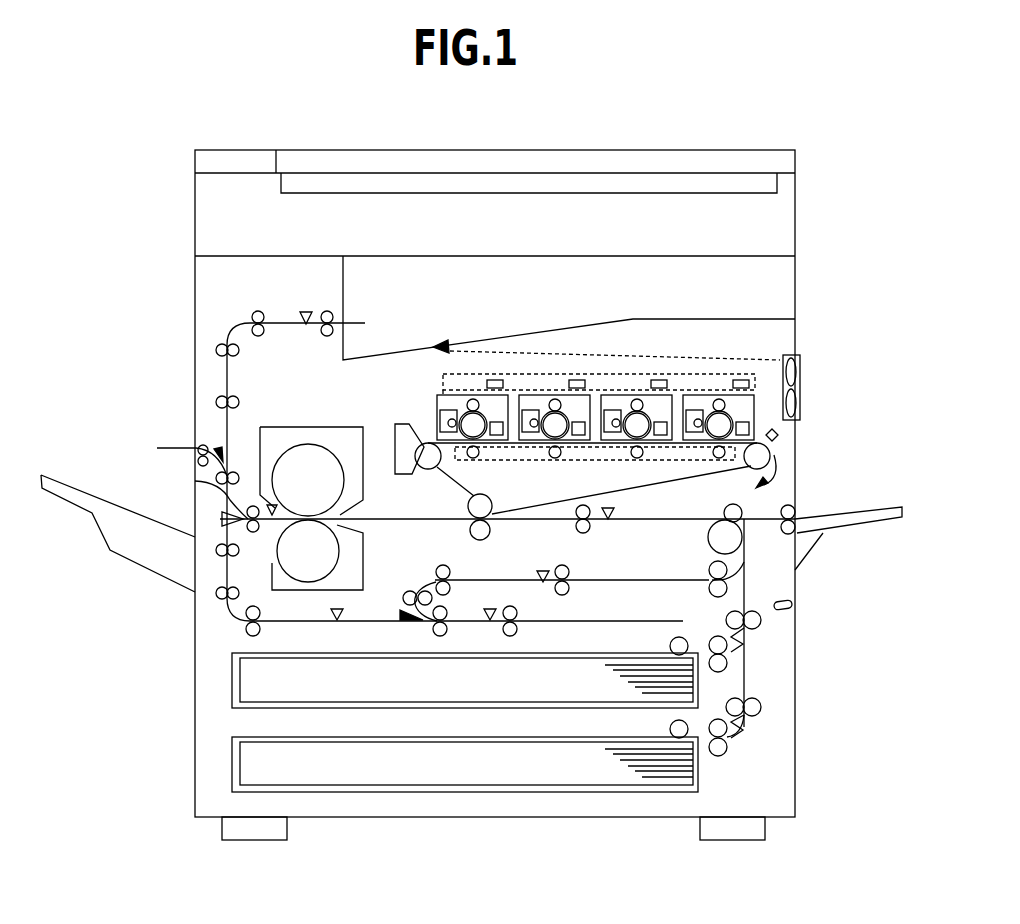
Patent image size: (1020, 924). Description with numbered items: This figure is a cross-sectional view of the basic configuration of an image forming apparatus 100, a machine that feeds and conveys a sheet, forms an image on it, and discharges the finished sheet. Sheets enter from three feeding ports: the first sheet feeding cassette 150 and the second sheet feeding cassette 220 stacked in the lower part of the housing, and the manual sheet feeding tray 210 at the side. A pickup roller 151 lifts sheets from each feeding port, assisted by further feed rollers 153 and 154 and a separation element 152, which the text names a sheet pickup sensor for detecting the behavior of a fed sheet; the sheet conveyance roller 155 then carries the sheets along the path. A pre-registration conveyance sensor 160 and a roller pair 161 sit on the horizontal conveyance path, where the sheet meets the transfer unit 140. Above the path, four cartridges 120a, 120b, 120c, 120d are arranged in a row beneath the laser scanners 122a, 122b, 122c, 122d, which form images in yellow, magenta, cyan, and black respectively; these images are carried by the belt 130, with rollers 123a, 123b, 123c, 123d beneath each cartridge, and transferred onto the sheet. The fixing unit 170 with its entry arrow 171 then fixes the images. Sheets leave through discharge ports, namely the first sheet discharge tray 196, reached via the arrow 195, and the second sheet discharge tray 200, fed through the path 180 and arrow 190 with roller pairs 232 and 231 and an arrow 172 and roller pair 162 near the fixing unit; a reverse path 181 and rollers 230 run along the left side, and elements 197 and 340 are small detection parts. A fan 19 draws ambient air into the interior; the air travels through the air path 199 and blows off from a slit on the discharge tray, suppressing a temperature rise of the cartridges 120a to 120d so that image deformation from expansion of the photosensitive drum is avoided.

The image forming apparatus 100 is at (641, 150).
The air path 199 is at (767, 358).
The fan 19 is at (800, 370).
The sensor 340 is at (778, 435).
The discharge arrow / path 195 is at (306, 311).
The first sheet discharge tray 196 is at (366, 321).
The reverse conveyance path 181 is at (226, 388).
The manual feed path 180 is at (160, 448).
The feed direction arrow 190 is at (213, 445).
The manual feed rollers 232 is at (197, 455).
The conveyance rollers 231 is at (210, 479).
The discharge arrow 172 is at (220, 518).
The conveyance roller pair 162 is at (253, 532).
The reverse conveyance rollers 230 is at (224, 572).
The second sheet discharge tray 200 is at (72, 478).
The fixing unit 170 is at (321, 444).
The fixing inlet arrow 171 is at (273, 500).
The intermediate transfer belt 130 is at (648, 491).
The transfer unit 140 is at (471, 530).
The cartridge 120a is at (437, 401).
The cartridge 120b is at (527, 393).
The cartridge 120c is at (608, 393).
The cartridge 120d is at (690, 393).
The laser scanner 122a is at (462, 383).
The laser scanner 122b is at (552, 380).
The laser scanner 122c is at (630, 380).
The laser scanner 122d is at (711, 380).
The primary transfer roller (first) 123a is at (470, 460).
The primary transfer roller (second) 123b is at (553, 460).
The primary transfer roller (third) 123c is at (635, 460).
The primary transfer roller (fourth) 123d is at (717, 462).
The registration roller pair 161 is at (578, 515).
The pre-registration conveyance sensor 160 is at (609, 520).
The sheet conveyance roller 155 is at (770, 545).
The manual sheet feeding tray 210 is at (870, 527).
The sensor 197 is at (788, 598).
The feed rollers 154 is at (760, 620).
The feed rollers 153 is at (762, 707).
The sheet pickup sensor 152 is at (733, 725).
The pickup roller 151 is at (670, 732).
The second sheet feeding cassette 220 is at (404, 699).
The first sheet feeding cassette 150 is at (404, 784).